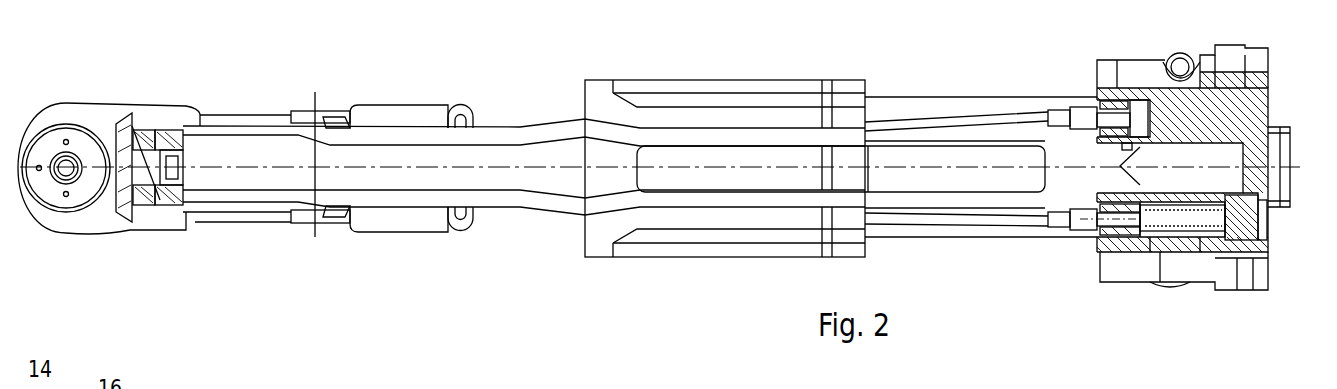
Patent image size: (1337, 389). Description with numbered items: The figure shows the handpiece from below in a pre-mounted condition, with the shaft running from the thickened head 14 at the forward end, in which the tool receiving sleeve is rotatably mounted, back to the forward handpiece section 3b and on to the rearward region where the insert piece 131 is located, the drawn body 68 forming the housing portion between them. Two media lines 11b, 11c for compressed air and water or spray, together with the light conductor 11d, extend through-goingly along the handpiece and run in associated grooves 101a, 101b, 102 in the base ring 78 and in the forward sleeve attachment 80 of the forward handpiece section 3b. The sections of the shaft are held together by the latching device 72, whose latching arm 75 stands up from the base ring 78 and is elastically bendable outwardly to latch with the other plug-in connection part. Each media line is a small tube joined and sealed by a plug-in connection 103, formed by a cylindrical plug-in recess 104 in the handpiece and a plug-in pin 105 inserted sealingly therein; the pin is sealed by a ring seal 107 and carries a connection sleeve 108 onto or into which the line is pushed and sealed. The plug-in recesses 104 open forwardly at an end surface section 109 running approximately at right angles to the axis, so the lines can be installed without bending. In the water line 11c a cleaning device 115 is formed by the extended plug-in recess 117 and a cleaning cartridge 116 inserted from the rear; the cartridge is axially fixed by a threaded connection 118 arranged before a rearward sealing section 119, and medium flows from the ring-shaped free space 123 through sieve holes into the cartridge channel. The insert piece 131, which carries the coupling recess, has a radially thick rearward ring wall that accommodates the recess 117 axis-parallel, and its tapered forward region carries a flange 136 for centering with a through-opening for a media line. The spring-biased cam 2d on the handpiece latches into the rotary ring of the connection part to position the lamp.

The head 14 is at (72, 103).
The plug-in pin 105 is at (136, 130).
The plug-in recess 104 is at (156, 130).
The plug-in connection 103 is at (176, 130).
The forward handpiece section 3b is at (215, 112).
The groove 102 is at (236, 128).
The forward sleeve attachment 80 is at (266, 118).
The latching device 72 is at (314, 92).
The latching arm 75 is at (336, 111).
The base ring 78 is at (380, 105).
The groove 101b is at (416, 122).
The media line 11b is at (500, 128).
The media line 11c is at (500, 208).
The light conductor 11d is at (508, 186).
The cylinder body 68 is at (762, 90).
The groove 101a is at (690, 105).
The flange 136 is at (863, 88).
The connection sleeve 108 is at (1072, 224).
The insert piece 131 is at (1266, 104).
The cam 2d is at (1283, 127).
The threaded connection 118 is at (1245, 176).
The sealing section 119 is at (1260, 205).
The cleaning cartridge 116 is at (1266, 238).
The end surface section 109 is at (1094, 240).
The ring seal 107 is at (1108, 240).
The free space 123 is at (1136, 238).
The cleaning device 115 is at (1168, 240).
The plug-in recess 117 is at (1196, 252).